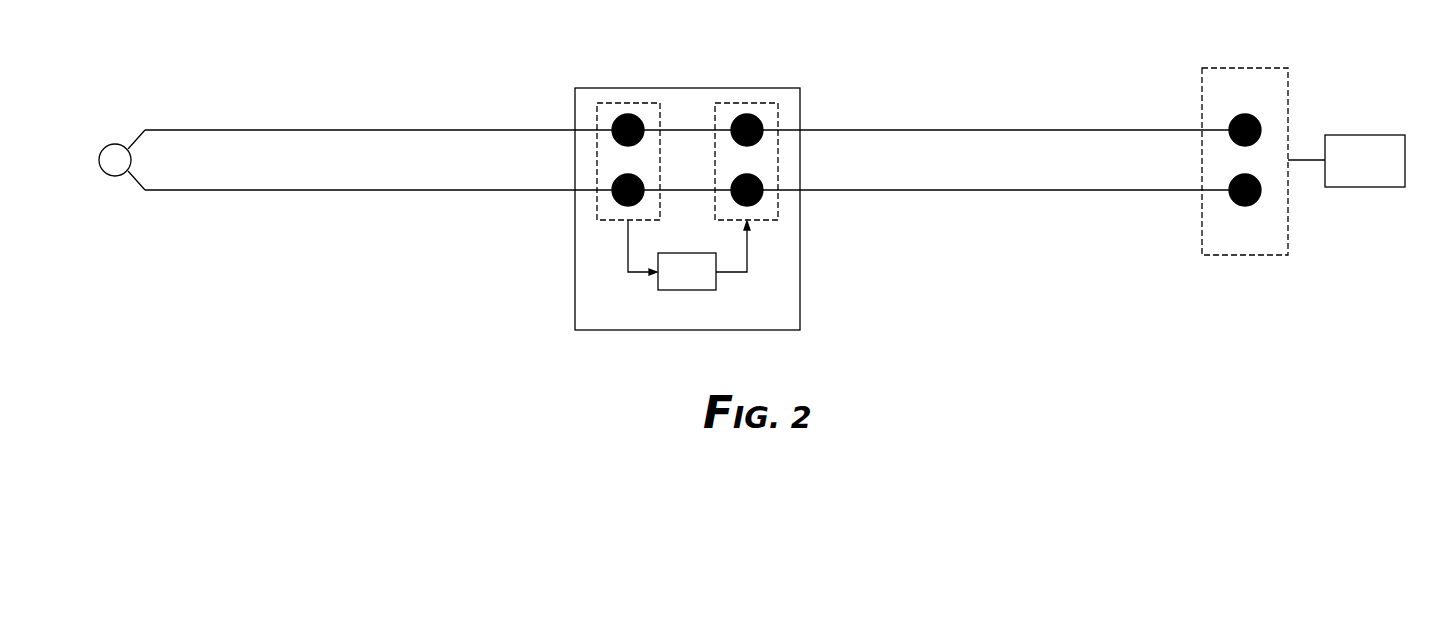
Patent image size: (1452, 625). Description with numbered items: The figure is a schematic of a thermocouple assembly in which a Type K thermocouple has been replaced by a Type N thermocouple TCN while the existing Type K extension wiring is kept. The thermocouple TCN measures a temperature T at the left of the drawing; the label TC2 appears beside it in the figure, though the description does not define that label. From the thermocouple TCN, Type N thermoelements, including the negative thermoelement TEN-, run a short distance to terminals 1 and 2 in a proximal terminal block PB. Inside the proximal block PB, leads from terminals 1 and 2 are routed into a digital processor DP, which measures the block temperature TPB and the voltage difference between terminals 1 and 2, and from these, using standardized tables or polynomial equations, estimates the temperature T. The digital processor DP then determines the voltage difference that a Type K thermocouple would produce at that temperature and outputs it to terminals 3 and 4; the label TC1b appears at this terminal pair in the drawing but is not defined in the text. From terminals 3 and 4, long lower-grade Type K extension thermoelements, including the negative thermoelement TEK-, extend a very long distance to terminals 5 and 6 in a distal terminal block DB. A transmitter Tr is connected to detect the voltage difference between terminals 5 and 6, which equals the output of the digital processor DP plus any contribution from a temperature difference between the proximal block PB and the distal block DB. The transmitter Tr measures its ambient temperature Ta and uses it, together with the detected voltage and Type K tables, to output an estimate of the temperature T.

The terminal 1 is at (623, 115).
The terminal 2 is at (612, 202).
The terminal 3 is at (755, 115).
The terminal 4 is at (762, 200).
The terminal 5 is at (1256, 118).
The terminal 6 is at (1258, 198).
The temperature T is at (111, 148).
The thermocouple TC2 is at (158, 160).
The Type N thermocouple TCN is at (118, 176).
The Type N thermoelement TEN- is at (247, 190).
The Type K extension thermoelement TEK- is at (889, 190).
The proximal terminal block PB is at (708, 88).
The temperature in the proximal block TPB is at (628, 161).
The thermocouple 1b TC1b is at (746, 161).
The digital processor DP is at (700, 290).
The distal terminal block DB is at (1228, 68).
The ambient temperature Ta is at (1290, 161).
The transmitter Tr is at (1368, 135).